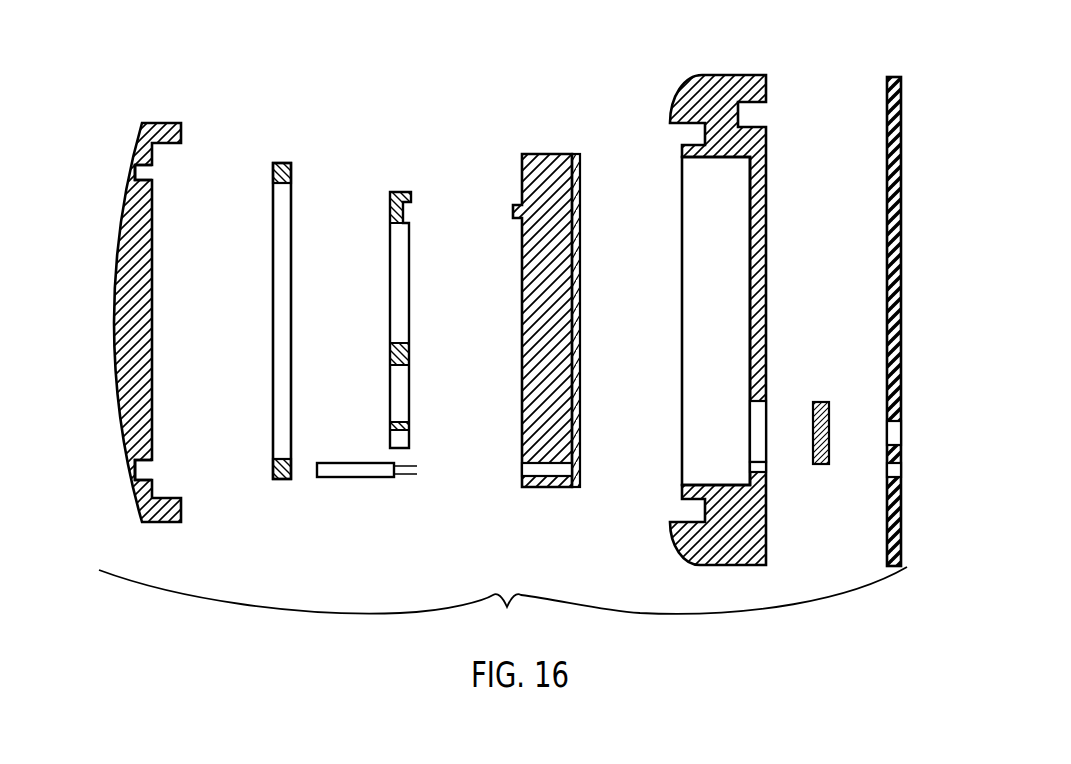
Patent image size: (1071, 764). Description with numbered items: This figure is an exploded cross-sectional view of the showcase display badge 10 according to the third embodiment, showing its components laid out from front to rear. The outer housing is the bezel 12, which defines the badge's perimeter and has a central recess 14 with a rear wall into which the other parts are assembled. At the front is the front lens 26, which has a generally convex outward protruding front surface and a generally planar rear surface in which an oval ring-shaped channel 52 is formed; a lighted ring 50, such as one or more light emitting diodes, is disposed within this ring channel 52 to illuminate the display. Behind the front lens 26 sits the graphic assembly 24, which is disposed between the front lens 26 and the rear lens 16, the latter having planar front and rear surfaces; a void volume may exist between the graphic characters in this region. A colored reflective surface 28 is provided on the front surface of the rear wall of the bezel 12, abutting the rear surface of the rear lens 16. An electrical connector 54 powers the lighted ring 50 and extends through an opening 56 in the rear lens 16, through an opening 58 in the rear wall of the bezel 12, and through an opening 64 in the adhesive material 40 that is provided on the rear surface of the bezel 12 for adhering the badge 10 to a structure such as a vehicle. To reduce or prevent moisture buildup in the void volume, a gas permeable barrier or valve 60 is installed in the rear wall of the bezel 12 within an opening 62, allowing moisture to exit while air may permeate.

The showcase display badge 10 is at (503, 605).
The bezel 12 is at (721, 75).
The central recess 14 is at (708, 215).
The rear lens 16 is at (543, 153).
The graphic assembly 24 is at (400, 192).
The front lens 26 is at (119, 213).
The colored reflective surface 28 is at (580, 183).
The adhesive material 40 is at (893, 77).
The lighted ring 50 is at (282, 162).
The ring-shaped channel 52 is at (148, 170).
The electrical connector 54 is at (352, 478).
The opening in the rear lens 56 is at (530, 469).
The opening in the rear wall of the bezel 58 is at (762, 471).
The gas permeable barrier or valve 60 is at (826, 402).
The opening in the rear wall of the bezel for the valve 62 is at (758, 414).
The opening in adhesive 64 is at (896, 467).